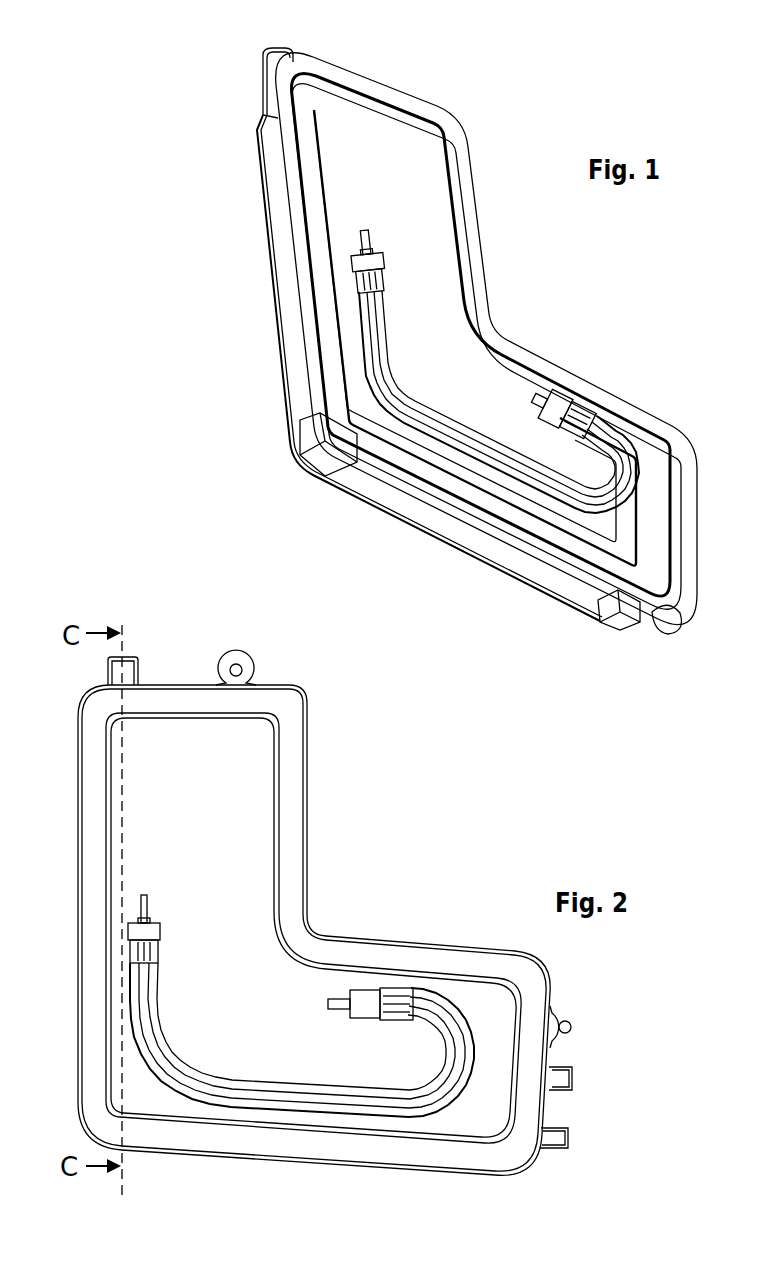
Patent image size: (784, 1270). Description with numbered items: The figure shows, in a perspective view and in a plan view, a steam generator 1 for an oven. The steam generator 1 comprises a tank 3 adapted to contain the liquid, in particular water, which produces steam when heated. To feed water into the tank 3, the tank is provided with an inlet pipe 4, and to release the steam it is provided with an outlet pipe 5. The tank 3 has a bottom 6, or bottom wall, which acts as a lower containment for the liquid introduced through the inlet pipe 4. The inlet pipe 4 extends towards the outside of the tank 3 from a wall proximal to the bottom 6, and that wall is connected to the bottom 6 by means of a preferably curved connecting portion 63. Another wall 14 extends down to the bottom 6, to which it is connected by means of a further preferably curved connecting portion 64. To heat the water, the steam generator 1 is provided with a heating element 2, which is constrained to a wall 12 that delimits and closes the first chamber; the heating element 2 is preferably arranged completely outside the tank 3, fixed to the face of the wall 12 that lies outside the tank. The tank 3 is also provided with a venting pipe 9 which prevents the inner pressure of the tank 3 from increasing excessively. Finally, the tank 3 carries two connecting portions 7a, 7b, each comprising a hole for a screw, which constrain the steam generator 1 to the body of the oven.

In FIG. 1, the steam generator 1 is at (137, 183).
In FIG. 1, the heating element 2 is at (421, 392).
In FIG. 2, the heating element 2 is at (248, 1108).
In FIG. 1, the tank 3 is at (275, 333).
In FIG. 2, the tank 3 is at (352, 935).
In FIG. 1, the inlet pipe 4 is at (653, 622).
In FIG. 2, the inlet pipe 4 is at (550, 1142).
In FIG. 1, the outlet pipe 5 is at (272, 57).
In FIG. 2, the outlet pipe 5 is at (138, 672).
In FIG. 1, the bottom 6 is at (455, 527).
In FIG. 2, the connecting portion 7a is at (237, 668).
In FIG. 2, the connecting portion 7b is at (575, 1020).
In FIG. 2, the venting pipe 9 is at (560, 1082).
In FIG. 1, the wall 12 is at (417, 185).
In FIG. 2, the wall 12 is at (250, 848).
In FIG. 1, the wall 14 is at (280, 193).
In FIG. 1, the connecting portion 63 is at (617, 614).
In FIG. 1, the connecting portion 64 is at (305, 433).